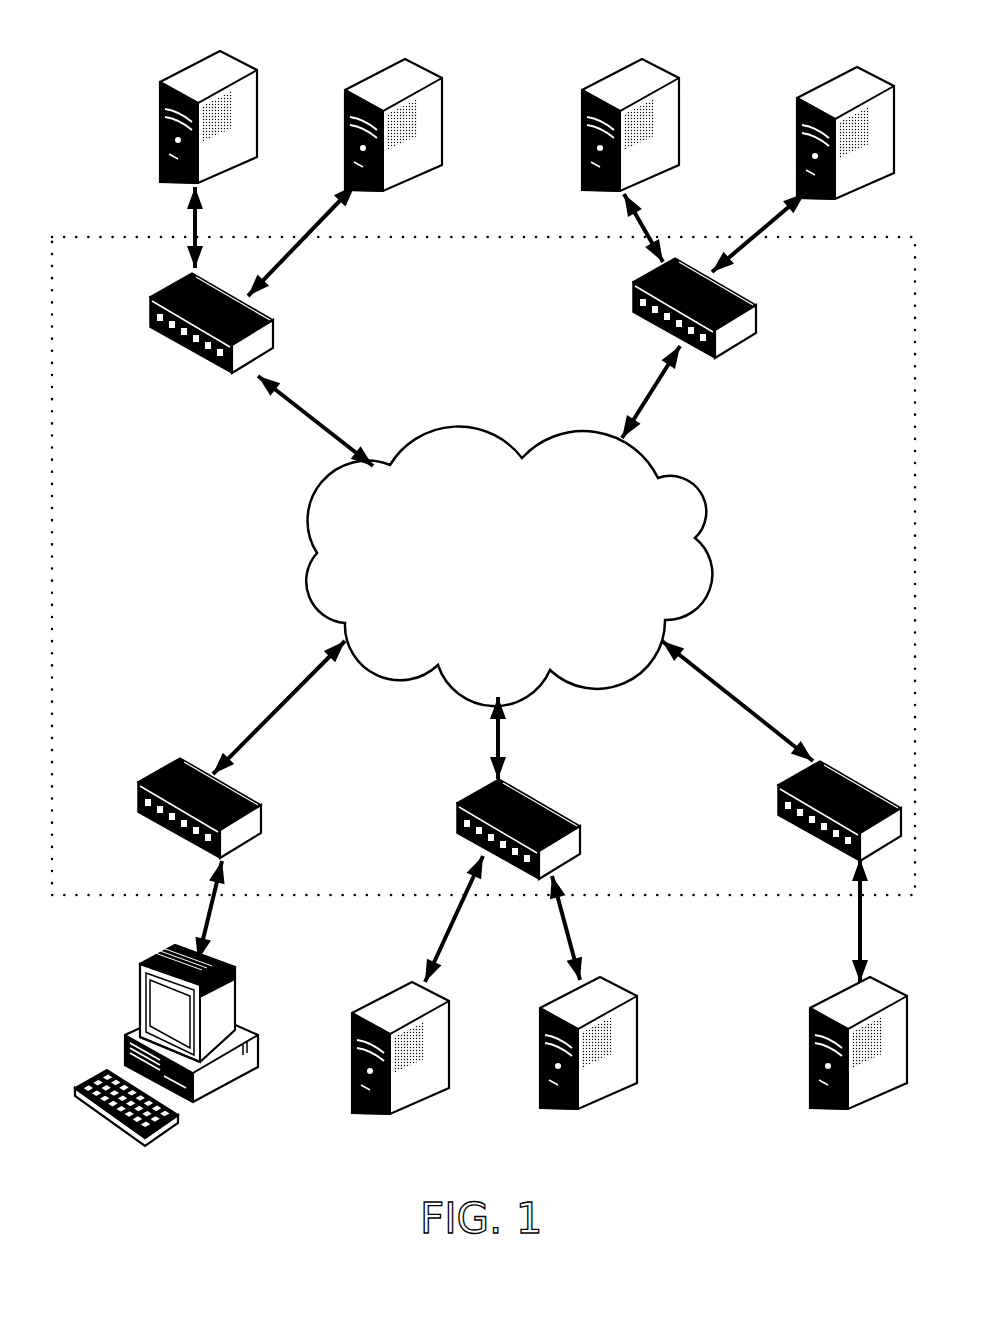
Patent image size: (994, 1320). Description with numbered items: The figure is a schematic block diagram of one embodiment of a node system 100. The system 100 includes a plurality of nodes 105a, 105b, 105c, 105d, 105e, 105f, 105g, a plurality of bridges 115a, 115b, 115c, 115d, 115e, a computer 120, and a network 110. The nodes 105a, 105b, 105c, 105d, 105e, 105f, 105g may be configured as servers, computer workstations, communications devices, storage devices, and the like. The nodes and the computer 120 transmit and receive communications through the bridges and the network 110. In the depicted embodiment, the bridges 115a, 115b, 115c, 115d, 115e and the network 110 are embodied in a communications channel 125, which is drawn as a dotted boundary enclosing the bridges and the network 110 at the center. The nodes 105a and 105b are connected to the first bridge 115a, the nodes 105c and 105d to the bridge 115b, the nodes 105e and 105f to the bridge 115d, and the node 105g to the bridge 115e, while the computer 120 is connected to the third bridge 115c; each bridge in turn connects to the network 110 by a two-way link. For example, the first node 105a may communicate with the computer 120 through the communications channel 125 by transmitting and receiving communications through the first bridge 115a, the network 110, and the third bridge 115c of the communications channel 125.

The node system 100 is at (130, 62).
The first node 105a is at (160, 128).
The node 105b is at (358, 82).
The node 105c is at (582, 137).
The node 105d is at (797, 148).
The node 105e is at (352, 1099).
The node 105f is at (563, 1107).
The node 105g is at (810, 1060).
The network 110 is at (519, 587).
The first bridge 115a is at (150, 308).
The bridge 115b is at (633, 308).
The third bridge 115c is at (138, 806).
The bridge 115d is at (457, 834).
The bridge 115e is at (778, 816).
The computer 120 is at (167, 967).
The communications channel 125 is at (160, 605).